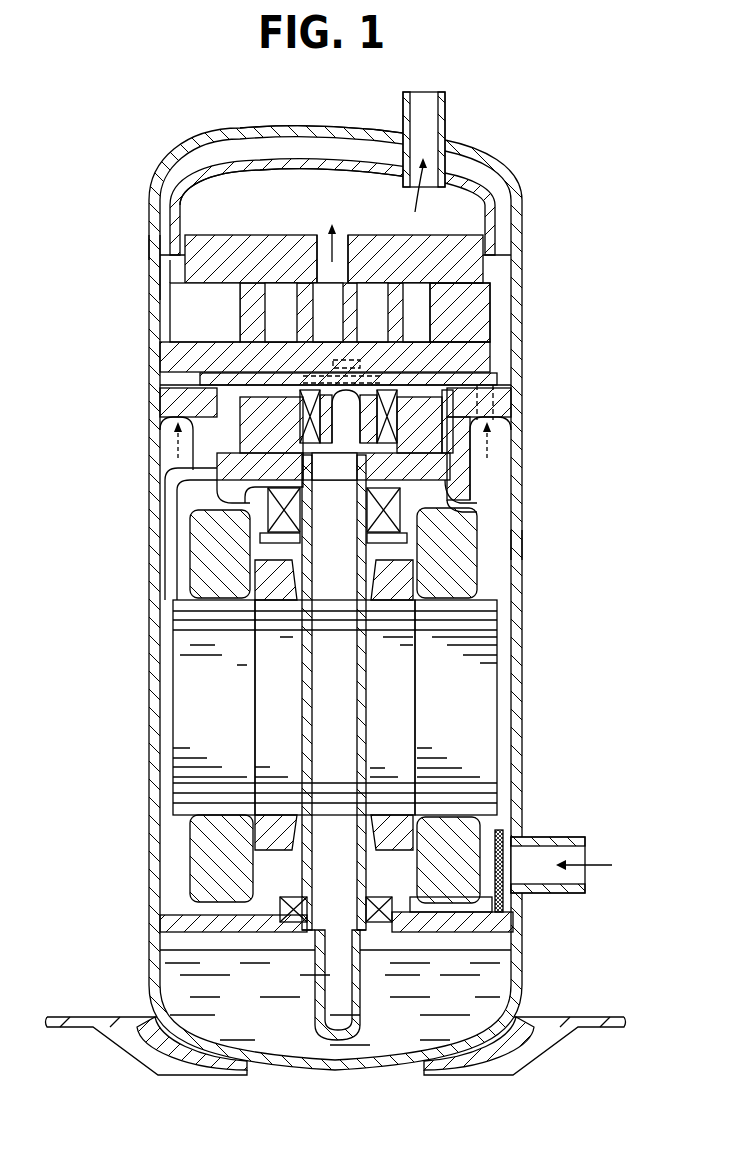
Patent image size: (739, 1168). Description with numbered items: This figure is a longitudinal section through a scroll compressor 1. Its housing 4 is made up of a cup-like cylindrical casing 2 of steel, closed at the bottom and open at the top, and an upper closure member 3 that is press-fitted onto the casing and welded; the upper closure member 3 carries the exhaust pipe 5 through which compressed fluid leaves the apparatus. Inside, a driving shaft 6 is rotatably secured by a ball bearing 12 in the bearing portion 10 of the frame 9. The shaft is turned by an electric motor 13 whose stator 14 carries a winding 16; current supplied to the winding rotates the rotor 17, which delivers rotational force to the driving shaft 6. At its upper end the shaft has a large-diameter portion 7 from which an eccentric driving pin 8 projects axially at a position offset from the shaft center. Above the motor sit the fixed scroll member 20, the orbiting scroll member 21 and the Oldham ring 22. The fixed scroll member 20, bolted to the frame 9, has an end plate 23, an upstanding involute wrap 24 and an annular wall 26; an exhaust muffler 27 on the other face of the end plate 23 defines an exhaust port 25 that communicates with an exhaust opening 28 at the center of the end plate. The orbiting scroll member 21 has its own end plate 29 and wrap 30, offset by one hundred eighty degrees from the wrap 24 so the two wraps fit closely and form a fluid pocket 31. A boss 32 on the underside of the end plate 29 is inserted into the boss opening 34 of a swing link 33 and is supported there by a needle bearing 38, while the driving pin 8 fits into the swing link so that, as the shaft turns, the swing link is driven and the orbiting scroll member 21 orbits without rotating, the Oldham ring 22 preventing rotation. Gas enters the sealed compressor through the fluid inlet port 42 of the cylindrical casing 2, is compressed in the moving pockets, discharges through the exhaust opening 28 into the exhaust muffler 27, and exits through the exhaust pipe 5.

The scroll compressor 1 is at (525, 736).
The cylindrical casing 2 is at (152, 252).
The upper closure member 3 is at (341, 131).
The housing 4 is at (515, 541).
The exhaust pipe 5 is at (447, 109).
The driving shaft 6 is at (360, 672).
The large-diameter portion 7 is at (437, 473).
The driving pin 8 is at (253, 410).
The frame 9 is at (465, 463).
The bearing portion 10 is at (257, 507).
The ball bearing 12 is at (295, 513).
The electric motor 13 is at (478, 698).
The stator 14 is at (193, 703).
The winding 16 is at (203, 858).
The rotor 17 is at (275, 685).
The fixed scroll member 20 is at (219, 260).
The orbiting scroll member 21 is at (477, 360).
The Oldham ring 22 is at (493, 383).
The end plate 23 is at (440, 248).
The wrap 24 is at (418, 302).
The exhaust port 25 is at (278, 190).
The annular wall 26 is at (163, 318).
The exhaust muffler 27 is at (228, 172).
The exhaust opening 28 is at (338, 247).
The end plate 29 is at (474, 334).
The wrap 30 is at (258, 312).
The fluid pocket 31 is at (452, 282).
The boss 32 is at (325, 432).
The swing link 33 is at (433, 433).
The boss opening 34 is at (352, 448).
The needle bearing 38 is at (305, 417).
The fluid inlet port 42 is at (556, 836).